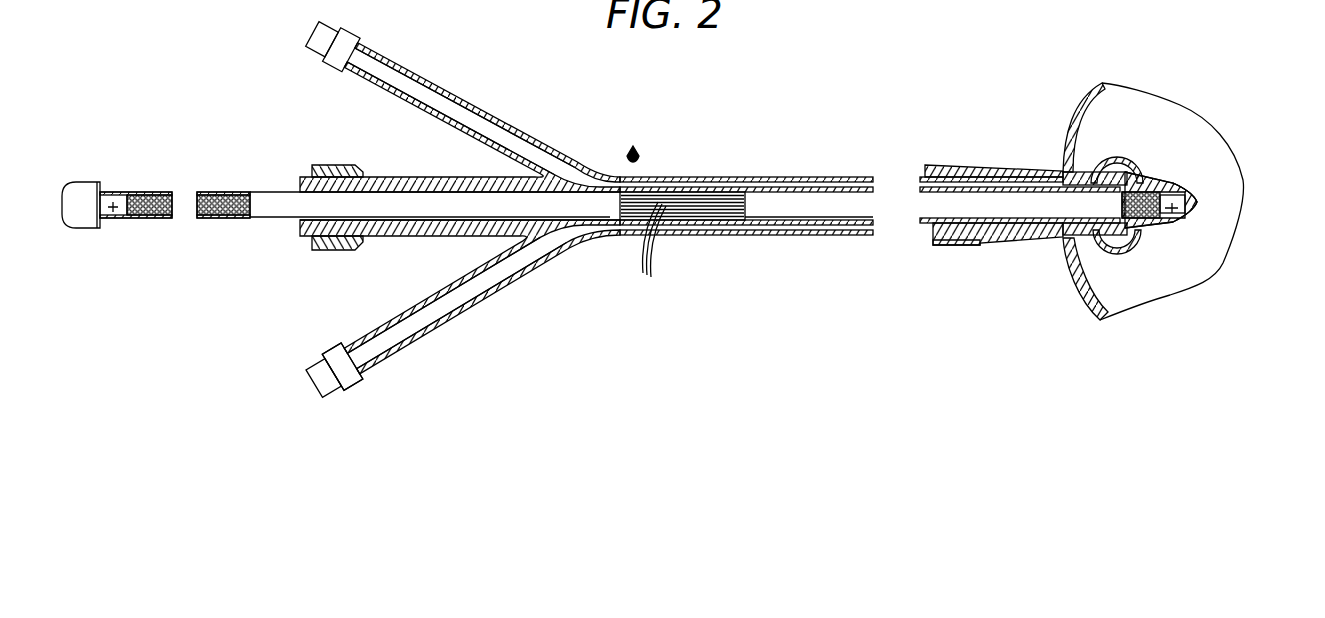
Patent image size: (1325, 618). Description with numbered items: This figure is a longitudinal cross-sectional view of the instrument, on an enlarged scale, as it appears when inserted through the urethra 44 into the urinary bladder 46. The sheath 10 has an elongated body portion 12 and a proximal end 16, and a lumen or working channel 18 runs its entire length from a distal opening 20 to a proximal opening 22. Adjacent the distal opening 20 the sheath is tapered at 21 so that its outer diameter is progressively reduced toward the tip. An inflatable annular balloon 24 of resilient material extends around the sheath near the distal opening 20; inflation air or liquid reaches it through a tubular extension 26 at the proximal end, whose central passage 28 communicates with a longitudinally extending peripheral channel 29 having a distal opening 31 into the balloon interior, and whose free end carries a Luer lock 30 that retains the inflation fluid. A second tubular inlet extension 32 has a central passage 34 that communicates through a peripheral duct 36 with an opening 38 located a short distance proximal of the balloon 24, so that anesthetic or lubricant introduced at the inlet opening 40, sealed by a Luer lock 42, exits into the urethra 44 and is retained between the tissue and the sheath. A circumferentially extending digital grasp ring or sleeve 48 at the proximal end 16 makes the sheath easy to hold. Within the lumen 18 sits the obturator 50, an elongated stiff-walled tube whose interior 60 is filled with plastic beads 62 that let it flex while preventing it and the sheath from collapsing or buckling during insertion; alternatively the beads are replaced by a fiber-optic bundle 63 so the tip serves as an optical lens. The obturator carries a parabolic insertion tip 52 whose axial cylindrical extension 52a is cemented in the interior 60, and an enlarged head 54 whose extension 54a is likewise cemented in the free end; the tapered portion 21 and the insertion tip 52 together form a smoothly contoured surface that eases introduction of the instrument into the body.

The sheath 10 is at (633, 148).
The elongated body portion 12 is at (688, 178).
The proximal end 16 is at (437, 177).
The lumen or working channel 18 is at (423, 217).
The distal opening 20 is at (1185, 186).
The tapered portion 21 is at (1178, 190).
The proximal opening 22 is at (297, 217).
The inflatable annular balloon 24 is at (1117, 158).
The tubular extension 26 is at (423, 76).
The central passage 28 is at (451, 113).
The peripheral channel 29 is at (760, 185).
The Luer lock 30 is at (353, 30).
The distal opening 31 is at (1117, 172).
The extension 32 is at (548, 268).
The central passage 34 is at (480, 287).
The peripheral duct 36 is at (758, 226).
The opening 38 is at (980, 247).
The opening 40 is at (310, 378).
The Luer lock 42 is at (327, 352).
The urethra 44 is at (1008, 247).
The urinary bladder 46 is at (1097, 300).
The digital grasp ring or sleeve 48 is at (330, 167).
The obturator 50 is at (229, 192).
The parabolic insertion tip 52 is at (1197, 203).
The axial cylindrical extension 52a is at (1170, 230).
The enlarged head 54 is at (78, 183).
The extension 54a is at (112, 218).
The interior 60 is at (140, 195).
The plastic beads 62 is at (203, 218).
The fiber-optic bundle 63 is at (639, 247).